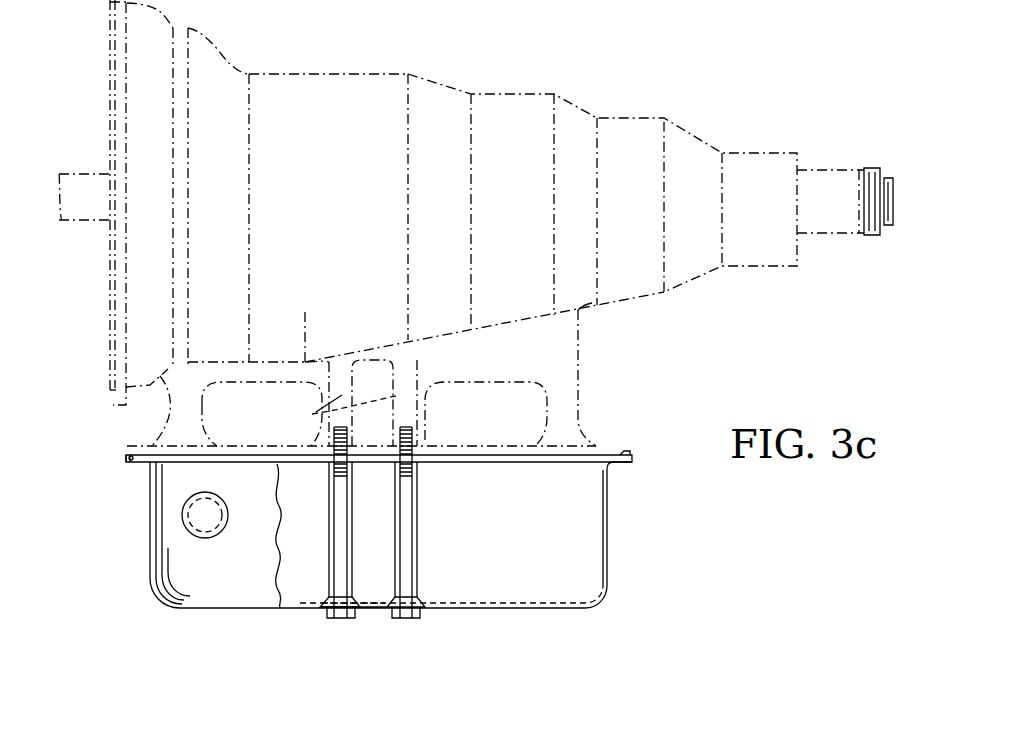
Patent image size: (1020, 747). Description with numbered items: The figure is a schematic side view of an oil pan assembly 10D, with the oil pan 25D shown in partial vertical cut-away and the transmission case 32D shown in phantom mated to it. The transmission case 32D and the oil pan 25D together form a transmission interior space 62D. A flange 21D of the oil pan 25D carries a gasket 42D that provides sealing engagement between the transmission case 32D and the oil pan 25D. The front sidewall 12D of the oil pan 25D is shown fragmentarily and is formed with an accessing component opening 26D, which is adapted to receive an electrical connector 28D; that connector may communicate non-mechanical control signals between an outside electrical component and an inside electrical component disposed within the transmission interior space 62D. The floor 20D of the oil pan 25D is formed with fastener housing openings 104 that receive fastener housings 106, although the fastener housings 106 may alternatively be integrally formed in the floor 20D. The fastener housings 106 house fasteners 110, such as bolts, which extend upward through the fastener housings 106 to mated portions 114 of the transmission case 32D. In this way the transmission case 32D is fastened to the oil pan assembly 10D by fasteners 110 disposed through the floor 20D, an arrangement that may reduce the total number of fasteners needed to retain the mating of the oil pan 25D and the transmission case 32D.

The oil pan assembly 10D is at (628, 545).
The front sidewall 12D is at (228, 577).
The floor 20D is at (535, 610).
The flange 21D is at (628, 464).
The oil pan 25D is at (606, 565).
The accessing component opening 26D is at (180, 515).
The electrical connector 28D is at (186, 503).
The transmission case 32D is at (580, 418).
The gasket 42D is at (628, 455).
The transmission interior space 62D is at (560, 378).
The fastener housing opening 104 is at (388, 598).
The fastener housing 106 is at (355, 520).
The fastener 110 is at (408, 620).
The mated portion 114 is at (335, 408).